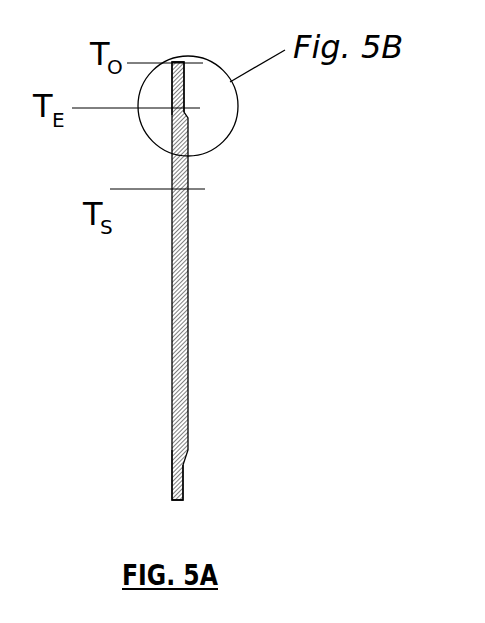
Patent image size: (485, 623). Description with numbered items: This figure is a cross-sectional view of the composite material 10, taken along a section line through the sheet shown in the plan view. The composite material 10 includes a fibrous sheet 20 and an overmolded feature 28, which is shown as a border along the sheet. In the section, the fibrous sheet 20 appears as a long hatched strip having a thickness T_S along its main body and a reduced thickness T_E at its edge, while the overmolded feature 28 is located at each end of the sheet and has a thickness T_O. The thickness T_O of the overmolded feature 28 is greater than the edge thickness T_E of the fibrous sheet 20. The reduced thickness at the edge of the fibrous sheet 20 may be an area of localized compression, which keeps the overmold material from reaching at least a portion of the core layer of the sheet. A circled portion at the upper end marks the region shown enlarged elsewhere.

The composite material 10 is at (122, 333).
The fibrous sheet 20 is at (186, 388).
The overmolded feature 28 is at (178, 82).